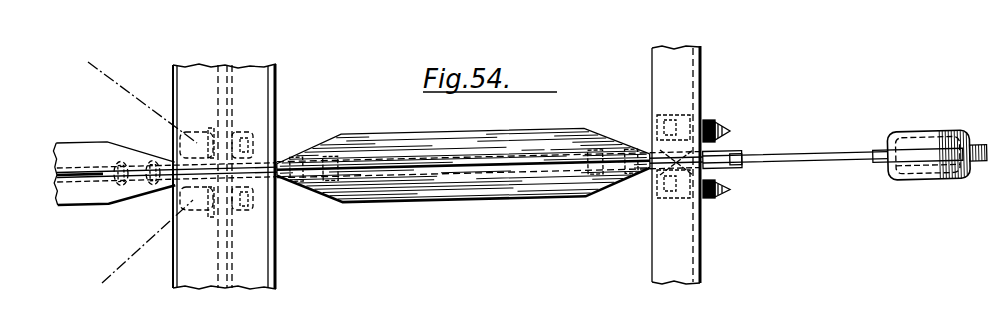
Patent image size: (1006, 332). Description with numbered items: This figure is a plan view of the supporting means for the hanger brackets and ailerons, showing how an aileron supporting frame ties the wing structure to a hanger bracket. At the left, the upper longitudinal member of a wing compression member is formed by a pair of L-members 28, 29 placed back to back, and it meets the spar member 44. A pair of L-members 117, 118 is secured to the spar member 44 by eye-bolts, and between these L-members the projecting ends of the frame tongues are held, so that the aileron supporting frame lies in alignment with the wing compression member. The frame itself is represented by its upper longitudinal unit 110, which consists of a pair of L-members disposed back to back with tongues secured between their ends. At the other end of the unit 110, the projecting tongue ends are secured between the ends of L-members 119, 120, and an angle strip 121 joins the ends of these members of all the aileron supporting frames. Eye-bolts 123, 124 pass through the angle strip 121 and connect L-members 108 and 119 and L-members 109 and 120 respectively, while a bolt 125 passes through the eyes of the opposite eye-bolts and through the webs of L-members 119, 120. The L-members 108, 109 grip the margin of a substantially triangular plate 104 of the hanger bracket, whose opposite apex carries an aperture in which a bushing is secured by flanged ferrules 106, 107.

The L-member 28 is at (110, 122).
The L-member 29 is at (107, 207).
The spar member 44 is at (255, 261).
The L-member 117 is at (326, 137).
The L-member 118 is at (326, 224).
The upper longitudinal unit 110 is at (480, 183).
The L-member 119 is at (651, 117).
The L-member 120 is at (693, 200).
The angle strip 121 is at (704, 39).
The eye-bolt 123 is at (761, 113).
The eye-bolt 124 is at (723, 190).
The bolt 125 is at (660, 177).
The L-member 108 is at (771, 143).
The L-member 109 is at (720, 171).
The triangular plate 104 is at (833, 165).
The flanged ferrule 106 is at (961, 120).
The flanged ferrule 107 is at (933, 181).